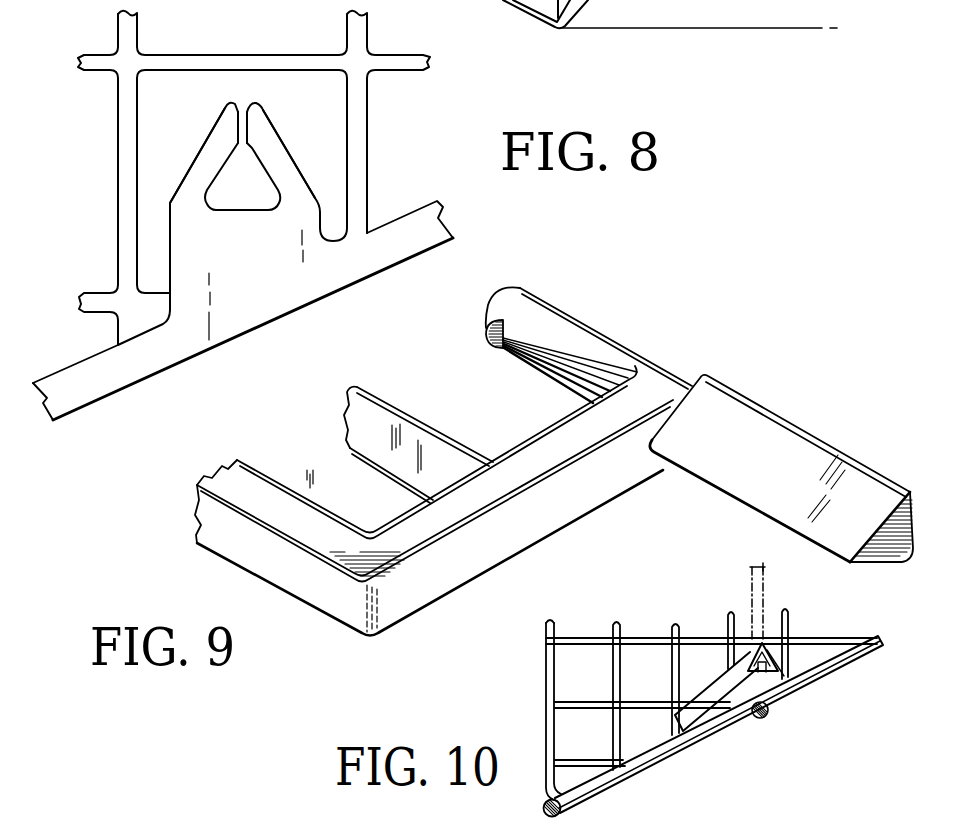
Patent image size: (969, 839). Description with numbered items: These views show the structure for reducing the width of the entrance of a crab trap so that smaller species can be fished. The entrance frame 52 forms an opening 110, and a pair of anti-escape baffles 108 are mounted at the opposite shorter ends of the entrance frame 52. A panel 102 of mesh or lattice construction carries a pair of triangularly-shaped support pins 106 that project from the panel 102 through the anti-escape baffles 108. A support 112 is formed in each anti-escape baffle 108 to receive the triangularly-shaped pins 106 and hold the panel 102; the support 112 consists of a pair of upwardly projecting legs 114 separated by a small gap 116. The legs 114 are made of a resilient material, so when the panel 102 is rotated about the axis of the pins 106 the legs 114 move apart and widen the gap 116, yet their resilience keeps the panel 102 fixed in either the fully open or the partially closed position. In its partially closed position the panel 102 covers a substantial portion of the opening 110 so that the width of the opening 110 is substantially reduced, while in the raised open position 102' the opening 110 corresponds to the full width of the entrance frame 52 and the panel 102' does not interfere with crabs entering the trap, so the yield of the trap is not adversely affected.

In FIG. 10, the entrance frame 52 is at (541, 806).
In FIG. 9, the panel 102 is at (443, 459).
In FIG. 10, the panel 102 is at (727, 713).
In FIG. 10, the open position of panel 102' is at (718, 601).
In FIG. 9, the triangularly-shaped support pins 106 is at (777, 428).
In FIG. 10, the triangularly-shaped support pins 106 is at (764, 672).
In FIG. 8, the anti-escape baffles 108 is at (445, 229).
In FIG. 10, the anti-escape baffles 108 is at (838, 668).
In FIG. 10, the opening 110 is at (672, 778).
In FIG. 8, the support 112 is at (251, 275).
In FIG. 8, the legs 114 is at (203, 151).
In FIG. 8, the gap 116 is at (243, 103).